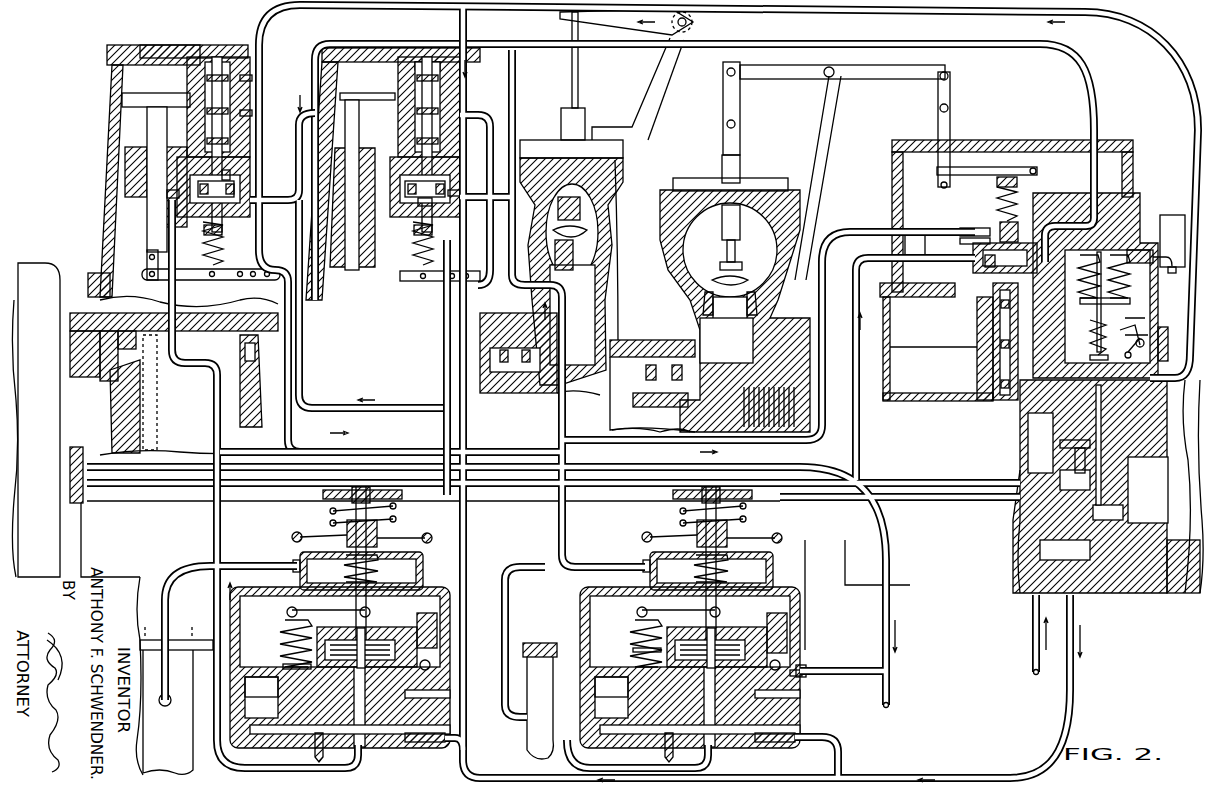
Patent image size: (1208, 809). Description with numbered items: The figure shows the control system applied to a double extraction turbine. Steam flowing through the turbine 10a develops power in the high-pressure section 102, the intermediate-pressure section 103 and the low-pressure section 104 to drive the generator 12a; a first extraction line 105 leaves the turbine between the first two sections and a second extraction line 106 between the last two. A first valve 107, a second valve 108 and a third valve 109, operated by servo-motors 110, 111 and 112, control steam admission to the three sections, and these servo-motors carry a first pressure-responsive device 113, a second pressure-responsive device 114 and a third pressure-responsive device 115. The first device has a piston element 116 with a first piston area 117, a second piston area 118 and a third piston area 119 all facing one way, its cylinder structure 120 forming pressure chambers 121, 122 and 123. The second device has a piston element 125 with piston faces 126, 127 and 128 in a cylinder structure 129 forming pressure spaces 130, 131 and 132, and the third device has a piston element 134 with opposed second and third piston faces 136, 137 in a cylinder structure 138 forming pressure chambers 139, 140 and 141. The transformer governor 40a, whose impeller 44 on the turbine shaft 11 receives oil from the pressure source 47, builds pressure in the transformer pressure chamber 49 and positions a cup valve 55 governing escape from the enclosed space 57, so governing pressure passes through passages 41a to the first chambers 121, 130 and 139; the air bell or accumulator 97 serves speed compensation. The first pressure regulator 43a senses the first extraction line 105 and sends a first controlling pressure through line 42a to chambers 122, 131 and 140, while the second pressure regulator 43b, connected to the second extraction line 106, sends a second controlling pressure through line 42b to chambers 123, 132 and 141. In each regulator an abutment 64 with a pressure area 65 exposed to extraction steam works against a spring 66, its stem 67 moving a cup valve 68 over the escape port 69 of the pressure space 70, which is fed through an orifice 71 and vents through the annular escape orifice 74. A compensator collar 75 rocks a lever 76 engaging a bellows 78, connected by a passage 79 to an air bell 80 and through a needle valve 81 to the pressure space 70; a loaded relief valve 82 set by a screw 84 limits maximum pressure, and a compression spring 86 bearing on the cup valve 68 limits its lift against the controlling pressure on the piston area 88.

The turbine 10a is at (645, 299).
The turbine shaft 11 is at (1020, 515).
The generator 12a is at (34, 275).
The transformer governor 40a is at (1180, 315).
The passages 41a is at (312, 78).
The line 42a is at (283, 268).
The line 42b is at (212, 368).
The first pressure regulator 43a is at (838, 711).
The second pressure regulator 43b is at (488, 708).
The impeller 44 is at (1140, 475).
The pressure source 47 is at (1058, 446).
The transformer pressure chamber 49 is at (1135, 355).
The cup or valve member 55 is at (1140, 250).
The enclosed space 57 is at (1096, 215).
The abutment 64 is at (745, 590).
The pressure area 65 is at (392, 580).
The spring 66 is at (396, 515).
The stem 67 is at (345, 571).
The cup or valve member 68 is at (370, 650).
The escape port 69 is at (800, 680).
The pressure space 70 is at (400, 715).
The orifice 71 is at (408, 752).
The annular escape orifice 74 is at (283, 655).
The collar 75 is at (372, 628).
The lever 76 is at (292, 609).
The bellows 78 is at (280, 636).
The passage 79 is at (305, 700).
The air bell 80 is at (250, 712).
The needle valve 81 is at (323, 752).
The loaded relief valve 82 is at (440, 680).
The screw 84 is at (800, 642).
The compression spring 86 is at (633, 651).
The piston area 88 is at (360, 678).
The air bell or accumulator 97 is at (1172, 215).
The high-pressure section 102 is at (625, 382).
The intermediate-pressure section 103 is at (488, 355).
The low-pressure section 104 is at (88, 335).
The first extraction line 105 is at (527, 742).
The second extraction line 106 is at (190, 750).
The first valve 107 is at (740, 283).
The second valve 108 is at (593, 228).
The third valve 109 is at (158, 370).
The first servo-motor 110 is at (925, 325).
The second servo-motor 111 is at (328, 218).
The third servo-motor 112 is at (103, 156).
The first pressure-responsive device 113 is at (980, 215).
The second pressure-responsive device 114 is at (480, 246).
The third pressure-responsive device 115 is at (253, 253).
The piston element 116 is at (985, 275).
The first piston area 117 is at (1000, 235).
The second piston area 118 is at (1045, 205).
The third piston area 119 is at (985, 262).
The cylinder structure 120 is at (975, 230).
The pressure chamber 121 is at (975, 242).
The pressure chamber 122 is at (995, 215).
The pressure chamber 123 is at (980, 262).
The piston element 125 is at (205, 222).
The first piston face 126 is at (412, 200).
The second piston face 127 is at (440, 140).
The third piston area 128 is at (418, 225).
The cylinder structure 129 is at (408, 196).
The pressure space 130 is at (420, 205).
The pressure space 131 is at (440, 178).
The pressure space 132 is at (414, 240).
The piston element 134 is at (186, 150).
The second piston face 136 is at (236, 178).
The third piston face 137 is at (228, 168).
The cylinder structure 138 is at (176, 206).
The pressure chamber 139 is at (230, 212).
The pressure chamber 140 is at (250, 181).
The pressure chamber 141 is at (232, 172).